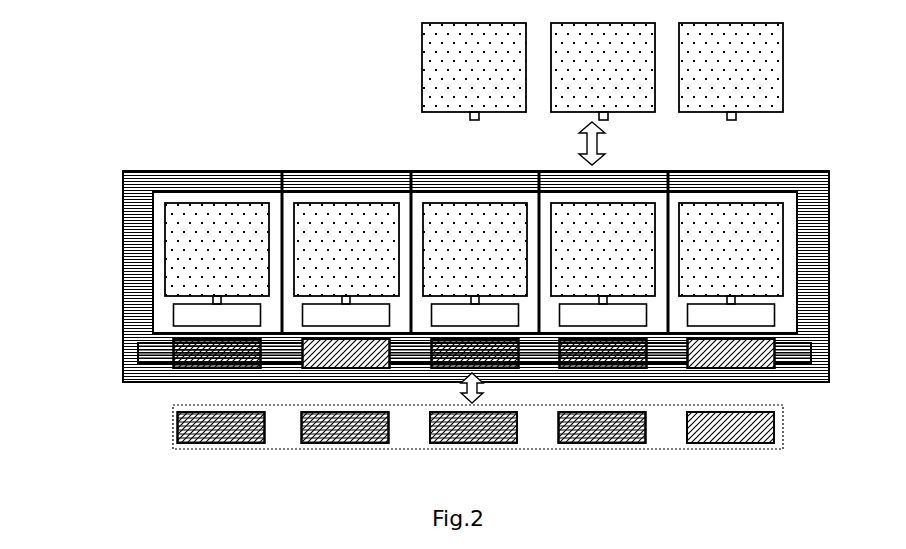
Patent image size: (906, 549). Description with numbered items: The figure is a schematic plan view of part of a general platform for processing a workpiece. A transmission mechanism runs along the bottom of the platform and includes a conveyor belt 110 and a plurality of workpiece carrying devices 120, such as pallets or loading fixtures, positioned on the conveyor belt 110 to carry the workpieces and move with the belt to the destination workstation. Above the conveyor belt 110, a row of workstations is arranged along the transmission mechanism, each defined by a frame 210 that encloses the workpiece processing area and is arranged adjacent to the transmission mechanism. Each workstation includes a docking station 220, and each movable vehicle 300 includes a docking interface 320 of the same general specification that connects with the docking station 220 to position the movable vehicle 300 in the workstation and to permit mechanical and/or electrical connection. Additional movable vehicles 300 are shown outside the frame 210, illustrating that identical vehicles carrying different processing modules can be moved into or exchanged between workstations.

The conveyor belt 110 is at (810, 350).
The workpiece carrying device 120 is at (775, 427).
The frame 210 is at (145, 221).
The docking station 220 is at (183, 315).
The movable vehicle 300 is at (347, 207).
The docking interface 320 is at (216, 298).